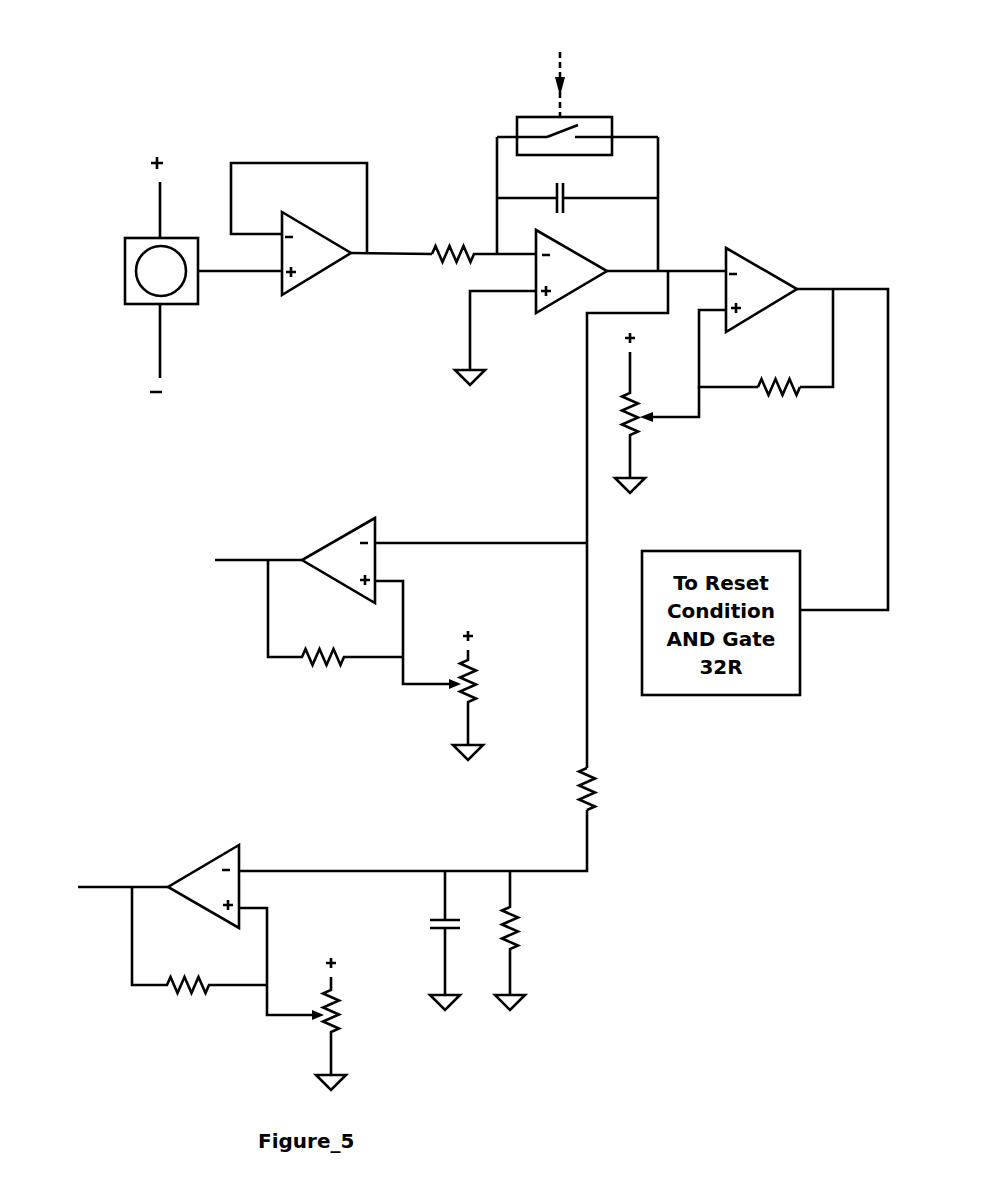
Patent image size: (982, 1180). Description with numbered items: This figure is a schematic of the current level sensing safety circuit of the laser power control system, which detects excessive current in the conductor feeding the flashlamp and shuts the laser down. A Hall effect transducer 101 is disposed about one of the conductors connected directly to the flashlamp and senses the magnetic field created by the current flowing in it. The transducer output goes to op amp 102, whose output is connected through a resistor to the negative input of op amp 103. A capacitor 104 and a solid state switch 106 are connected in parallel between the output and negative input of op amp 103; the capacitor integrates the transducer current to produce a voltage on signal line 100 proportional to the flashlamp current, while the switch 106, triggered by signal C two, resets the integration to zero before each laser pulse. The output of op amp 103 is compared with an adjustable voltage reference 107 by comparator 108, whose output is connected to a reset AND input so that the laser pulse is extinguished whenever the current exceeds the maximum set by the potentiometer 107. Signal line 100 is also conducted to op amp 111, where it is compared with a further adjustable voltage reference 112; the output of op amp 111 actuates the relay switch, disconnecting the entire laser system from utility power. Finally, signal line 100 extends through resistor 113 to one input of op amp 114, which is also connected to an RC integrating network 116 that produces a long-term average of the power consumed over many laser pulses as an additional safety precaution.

The signal line 100 is at (665, 268).
The Hall effect transducer 101 is at (130, 295).
The op amp 102 is at (314, 265).
The op amp 103 is at (567, 282).
The capacitor 104 is at (562, 192).
The solid state switch 106 is at (517, 128).
The adjustable voltage reference 107 is at (650, 422).
The comparator 108 is at (762, 268).
The op amp 111 is at (345, 545).
The adjustable voltage reference 112 is at (460, 703).
The resistor 113 is at (578, 790).
The op amp 114 is at (200, 867).
The RC integrating network 116 is at (480, 930).